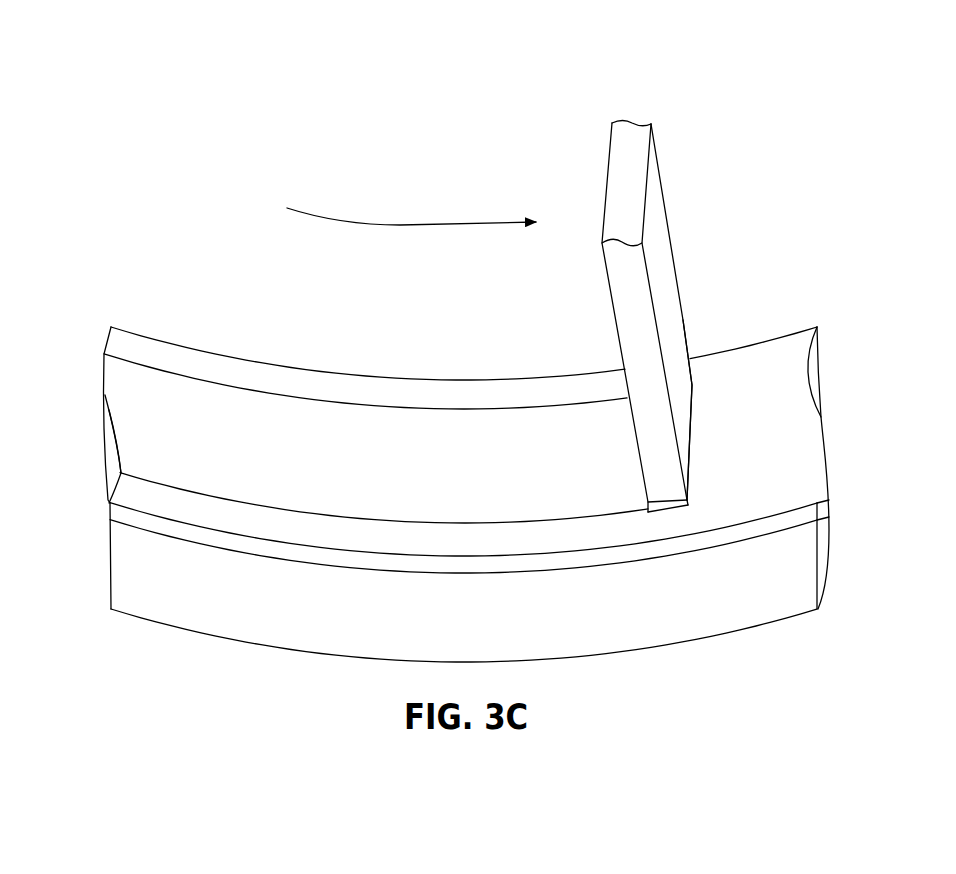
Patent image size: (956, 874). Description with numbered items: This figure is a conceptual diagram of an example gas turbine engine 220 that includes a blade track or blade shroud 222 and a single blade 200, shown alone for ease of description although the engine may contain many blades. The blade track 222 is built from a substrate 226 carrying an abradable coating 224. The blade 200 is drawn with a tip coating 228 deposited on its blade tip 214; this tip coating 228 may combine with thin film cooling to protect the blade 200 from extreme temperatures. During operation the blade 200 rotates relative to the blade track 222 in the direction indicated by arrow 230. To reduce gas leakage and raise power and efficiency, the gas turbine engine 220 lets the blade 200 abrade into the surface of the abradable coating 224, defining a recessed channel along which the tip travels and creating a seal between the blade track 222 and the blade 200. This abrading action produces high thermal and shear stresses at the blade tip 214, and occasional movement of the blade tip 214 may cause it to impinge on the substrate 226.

The gas turbine engine 220 is at (185, 64).
The blade track or blade shroud 222 is at (218, 322).
The abradable coating 224 is at (770, 352).
The substrate 226 is at (122, 572).
The blade 200 is at (693, 232).
The blade tip 214 is at (694, 450).
The tip coating 228 is at (643, 511).
The arrow 230 is at (372, 221).